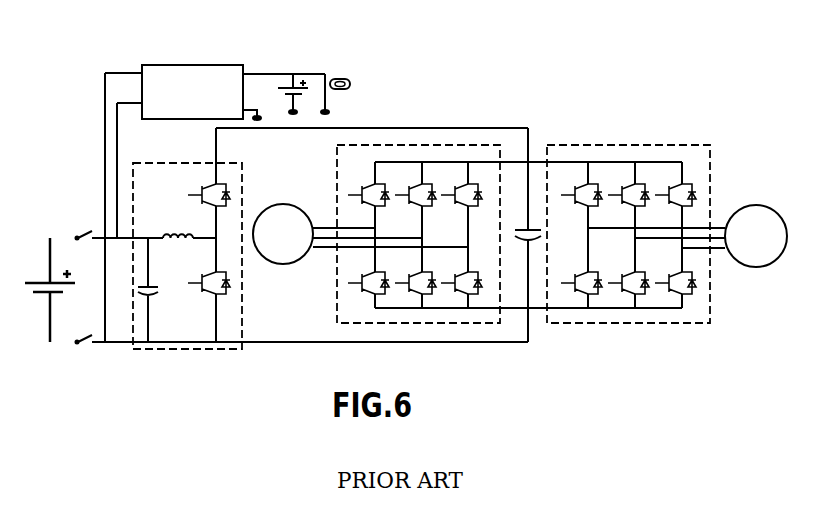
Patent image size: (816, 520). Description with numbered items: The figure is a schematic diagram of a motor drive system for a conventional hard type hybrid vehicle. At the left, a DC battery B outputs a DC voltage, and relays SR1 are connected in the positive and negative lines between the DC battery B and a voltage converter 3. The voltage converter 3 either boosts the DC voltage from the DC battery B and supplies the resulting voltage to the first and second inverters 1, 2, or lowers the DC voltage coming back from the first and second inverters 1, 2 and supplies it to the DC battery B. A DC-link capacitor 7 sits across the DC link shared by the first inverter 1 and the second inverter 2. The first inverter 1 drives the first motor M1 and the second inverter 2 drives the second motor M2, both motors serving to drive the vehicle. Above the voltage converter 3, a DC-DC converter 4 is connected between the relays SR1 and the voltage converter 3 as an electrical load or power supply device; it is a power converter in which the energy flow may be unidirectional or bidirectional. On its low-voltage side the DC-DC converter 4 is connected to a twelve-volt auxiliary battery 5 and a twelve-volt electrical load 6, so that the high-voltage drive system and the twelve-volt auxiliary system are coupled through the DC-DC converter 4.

The first inverter 1 is at (428, 144).
The second inverter 2 is at (615, 144).
The voltage converter 3 is at (165, 162).
The DC-DC converter 4 is at (192, 40).
The 12V auxiliary battery 5 is at (310, 60).
The 12V electrical load 6 is at (350, 79).
The DC-link capacitor 7 is at (538, 222).
The first relay SR1 is at (82, 231).
The DC battery B is at (45, 294).
The first motor M1 is at (283, 234).
The second motor M2 is at (756, 236).